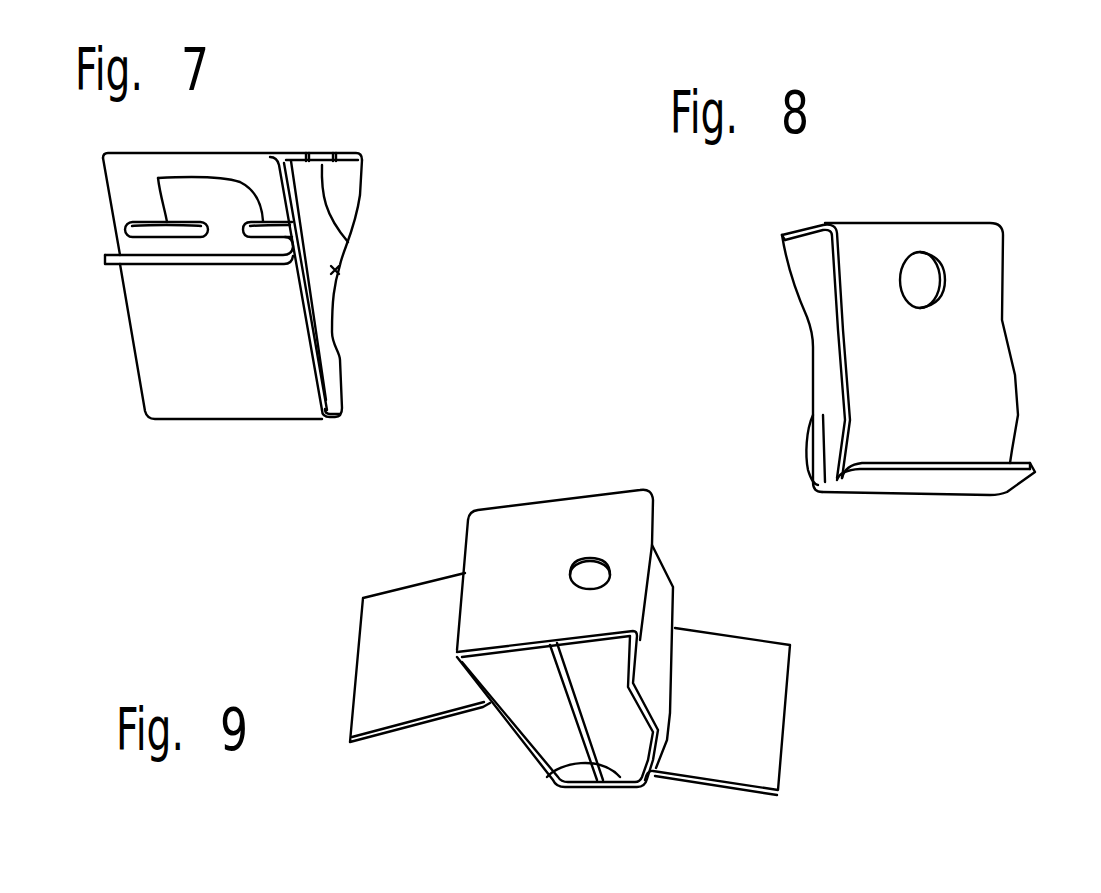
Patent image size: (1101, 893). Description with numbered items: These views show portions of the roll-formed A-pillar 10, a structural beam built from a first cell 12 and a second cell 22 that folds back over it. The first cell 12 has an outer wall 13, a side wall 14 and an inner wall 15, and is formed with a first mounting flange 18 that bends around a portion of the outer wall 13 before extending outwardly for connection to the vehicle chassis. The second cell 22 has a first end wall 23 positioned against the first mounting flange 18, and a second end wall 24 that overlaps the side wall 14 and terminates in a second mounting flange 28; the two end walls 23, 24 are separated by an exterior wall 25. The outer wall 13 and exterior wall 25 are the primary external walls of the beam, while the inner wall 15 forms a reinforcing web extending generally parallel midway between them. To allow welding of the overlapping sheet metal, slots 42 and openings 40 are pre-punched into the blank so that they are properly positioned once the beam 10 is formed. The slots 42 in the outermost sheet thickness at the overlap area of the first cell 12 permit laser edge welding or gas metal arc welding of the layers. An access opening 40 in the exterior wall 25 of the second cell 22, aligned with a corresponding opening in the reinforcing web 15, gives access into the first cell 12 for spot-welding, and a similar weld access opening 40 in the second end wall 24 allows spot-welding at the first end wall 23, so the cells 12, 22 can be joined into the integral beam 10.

In FIG. 7, the A-pillar 10 is at (387, 160).
In FIG. 8, the A-pillar 10 is at (948, 567).
In FIG. 9, the A-pillar 10 is at (857, 753).
In FIG. 7, the first cell 12 is at (233, 442).
In FIG. 9, the first cell 12 is at (452, 790).
In FIG. 7, the outer wall 13 is at (162, 348).
In FIG. 9, the outer wall 13 is at (507, 727).
In FIG. 7, the side wall 14 is at (348, 242).
In FIG. 9, the inner wall 15 is at (587, 730).
In FIG. 8, the first mounting flange 18 is at (1028, 473).
In FIG. 9, the first mounting flange 18 is at (743, 683).
In FIG. 8, the second cell 22 is at (962, 202).
In FIG. 9, the second cell 22 is at (670, 555).
In FIG. 8, the first end wall 23 is at (813, 418).
In FIG. 9, the first end wall 23 is at (560, 767).
In FIG. 7, the second end wall 24 is at (257, 151).
In FIG. 9, the second end wall 24 is at (505, 548).
In FIG. 8, the exterior wall 25 is at (977, 333).
In FIG. 9, the exterior wall 25 is at (657, 603).
In FIG. 7, the second mounting flange 28 is at (133, 255).
In FIG. 9, the second mounting flange 28 is at (383, 653).
In FIG. 8, the access opening 40 is at (900, 282).
In FIG. 9, the access opening 40 is at (592, 560).
In FIG. 7, the slots 42 is at (158, 178).